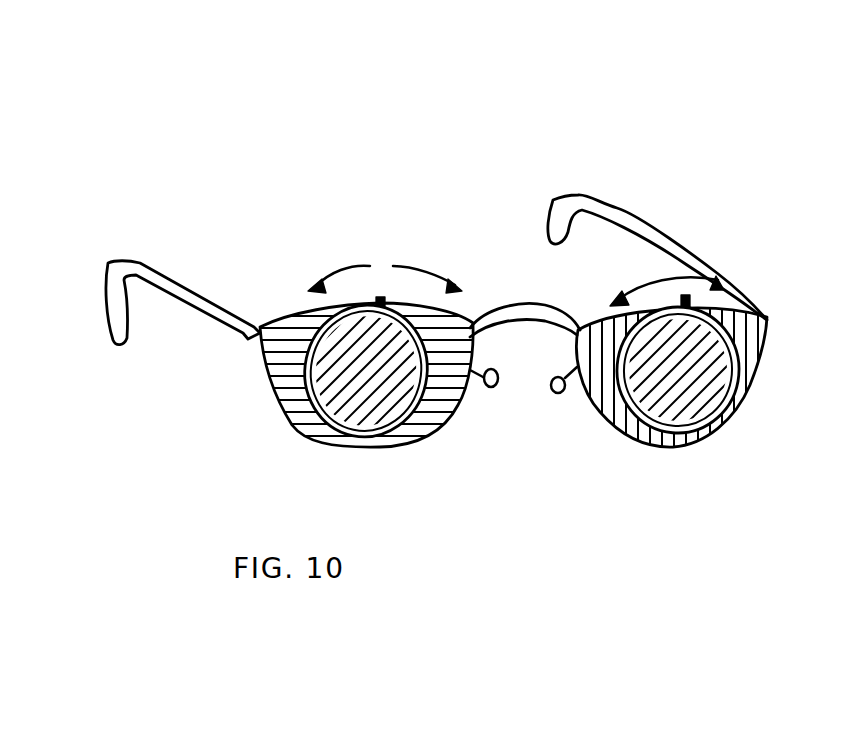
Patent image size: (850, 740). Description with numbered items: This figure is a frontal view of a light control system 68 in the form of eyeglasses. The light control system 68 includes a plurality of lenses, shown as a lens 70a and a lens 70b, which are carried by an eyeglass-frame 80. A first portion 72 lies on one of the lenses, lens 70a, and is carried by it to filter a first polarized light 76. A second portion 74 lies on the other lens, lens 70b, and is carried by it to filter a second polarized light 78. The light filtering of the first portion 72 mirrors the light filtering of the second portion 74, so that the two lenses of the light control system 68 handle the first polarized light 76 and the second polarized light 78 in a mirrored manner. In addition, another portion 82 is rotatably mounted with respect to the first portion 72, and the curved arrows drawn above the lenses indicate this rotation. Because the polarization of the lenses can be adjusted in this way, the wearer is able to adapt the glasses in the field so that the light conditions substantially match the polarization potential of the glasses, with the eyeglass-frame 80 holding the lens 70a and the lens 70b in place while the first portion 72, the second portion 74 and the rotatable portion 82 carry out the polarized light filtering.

The light control system 68 is at (96, 116).
The lens 70a is at (276, 428).
The lens 70b is at (766, 375).
The first portion 72 is at (275, 385).
The second portion 74 is at (610, 420).
The first polarized light 76 is at (400, 468).
The second polarized light 78 is at (687, 470).
The eyeglass-frame 80 is at (627, 220).
The another portion 82 is at (424, 412).